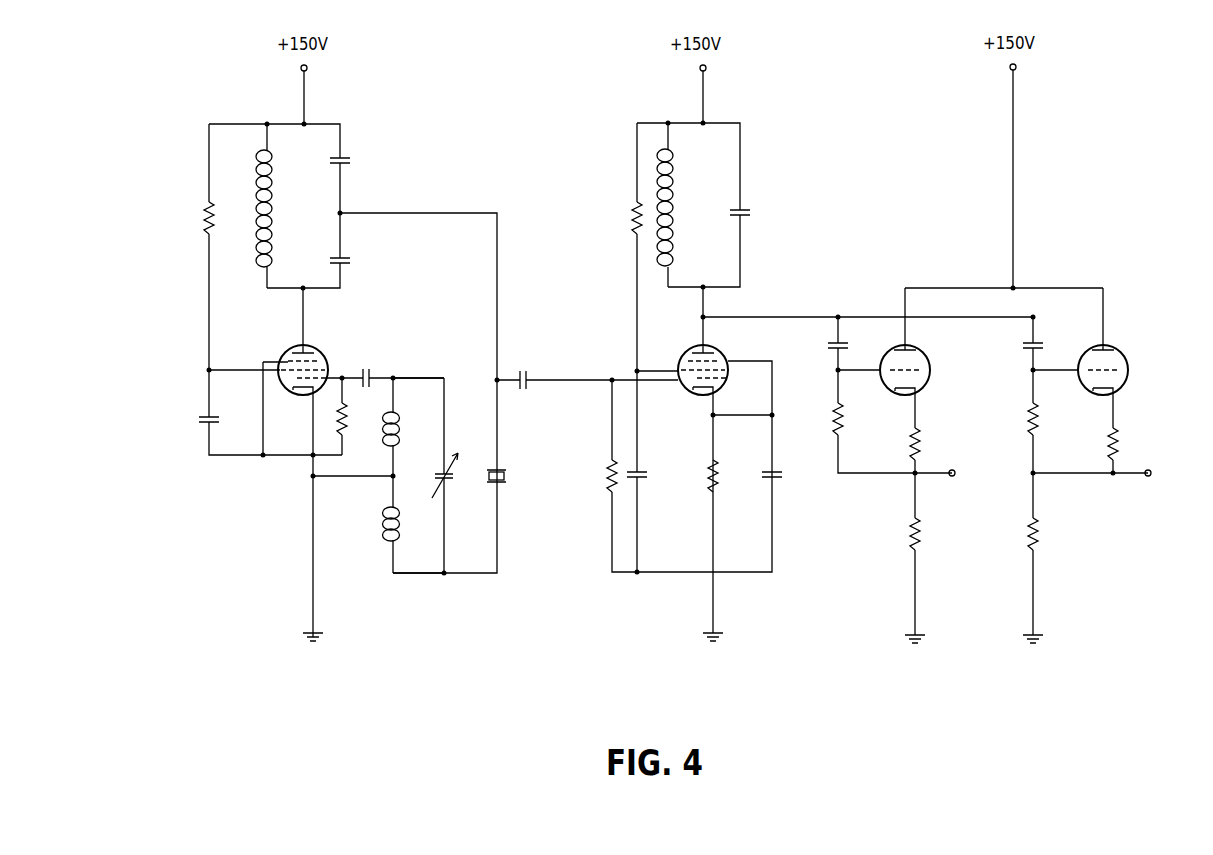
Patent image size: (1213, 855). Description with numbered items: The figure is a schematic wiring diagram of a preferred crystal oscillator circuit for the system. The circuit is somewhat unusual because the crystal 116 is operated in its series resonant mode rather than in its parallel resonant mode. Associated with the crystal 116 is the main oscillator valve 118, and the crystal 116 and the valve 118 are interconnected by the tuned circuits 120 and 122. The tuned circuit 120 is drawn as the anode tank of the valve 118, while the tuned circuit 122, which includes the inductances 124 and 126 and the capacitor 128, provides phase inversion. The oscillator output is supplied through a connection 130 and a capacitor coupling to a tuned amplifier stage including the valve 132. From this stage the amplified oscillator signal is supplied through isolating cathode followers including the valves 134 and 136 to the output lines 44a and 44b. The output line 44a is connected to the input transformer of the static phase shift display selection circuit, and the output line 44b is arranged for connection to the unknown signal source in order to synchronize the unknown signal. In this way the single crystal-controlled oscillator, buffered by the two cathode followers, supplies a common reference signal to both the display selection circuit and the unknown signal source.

The crystal 116 is at (501, 471).
The main oscillator valve 118 is at (327, 351).
The tuned circuit 120 is at (315, 223).
The tuned circuit 122 is at (431, 477).
The inductance 124 is at (402, 430).
The inductance 126 is at (402, 533).
The capacitor 128 is at (447, 483).
The connection 130 is at (508, 380).
The valve 132 is at (725, 357).
The valve 134 is at (923, 356).
The valve 136 is at (1122, 343).
The output line 44a is at (927, 473).
The output line 44b is at (1128, 473).